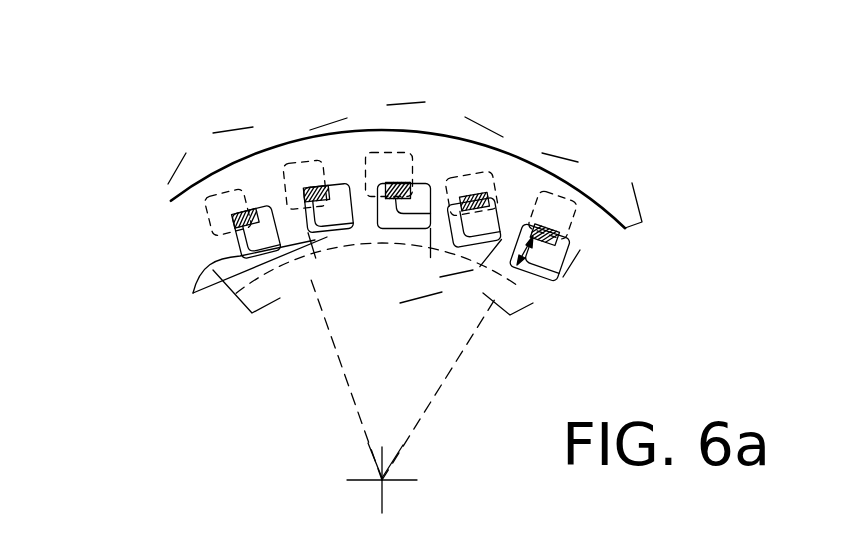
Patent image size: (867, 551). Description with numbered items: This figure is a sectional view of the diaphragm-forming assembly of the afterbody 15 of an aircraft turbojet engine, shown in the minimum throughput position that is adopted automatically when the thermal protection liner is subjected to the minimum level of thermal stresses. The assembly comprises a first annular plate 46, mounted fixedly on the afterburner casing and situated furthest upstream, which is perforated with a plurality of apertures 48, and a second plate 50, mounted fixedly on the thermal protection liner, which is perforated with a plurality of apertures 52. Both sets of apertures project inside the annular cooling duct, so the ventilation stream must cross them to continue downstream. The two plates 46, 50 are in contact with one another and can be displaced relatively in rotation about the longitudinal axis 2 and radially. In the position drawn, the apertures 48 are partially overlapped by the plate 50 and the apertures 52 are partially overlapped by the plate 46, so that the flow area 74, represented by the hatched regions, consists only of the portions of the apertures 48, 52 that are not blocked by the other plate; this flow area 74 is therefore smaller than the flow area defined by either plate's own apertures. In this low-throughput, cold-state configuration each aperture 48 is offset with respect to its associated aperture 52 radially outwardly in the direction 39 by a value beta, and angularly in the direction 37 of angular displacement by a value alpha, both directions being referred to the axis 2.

The afterbody 15 is at (189, 64).
The first annular plate 46 is at (168, 188).
The apertures 48 is at (205, 229).
The apertures 52 is at (249, 200).
The flow area 74 is at (193, 293).
The second plate 50 is at (360, 307).
The direction 39 is at (458, 390).
The direction of angular displacement 37 is at (373, 327).
The longitudinal axis 2 is at (383, 476).